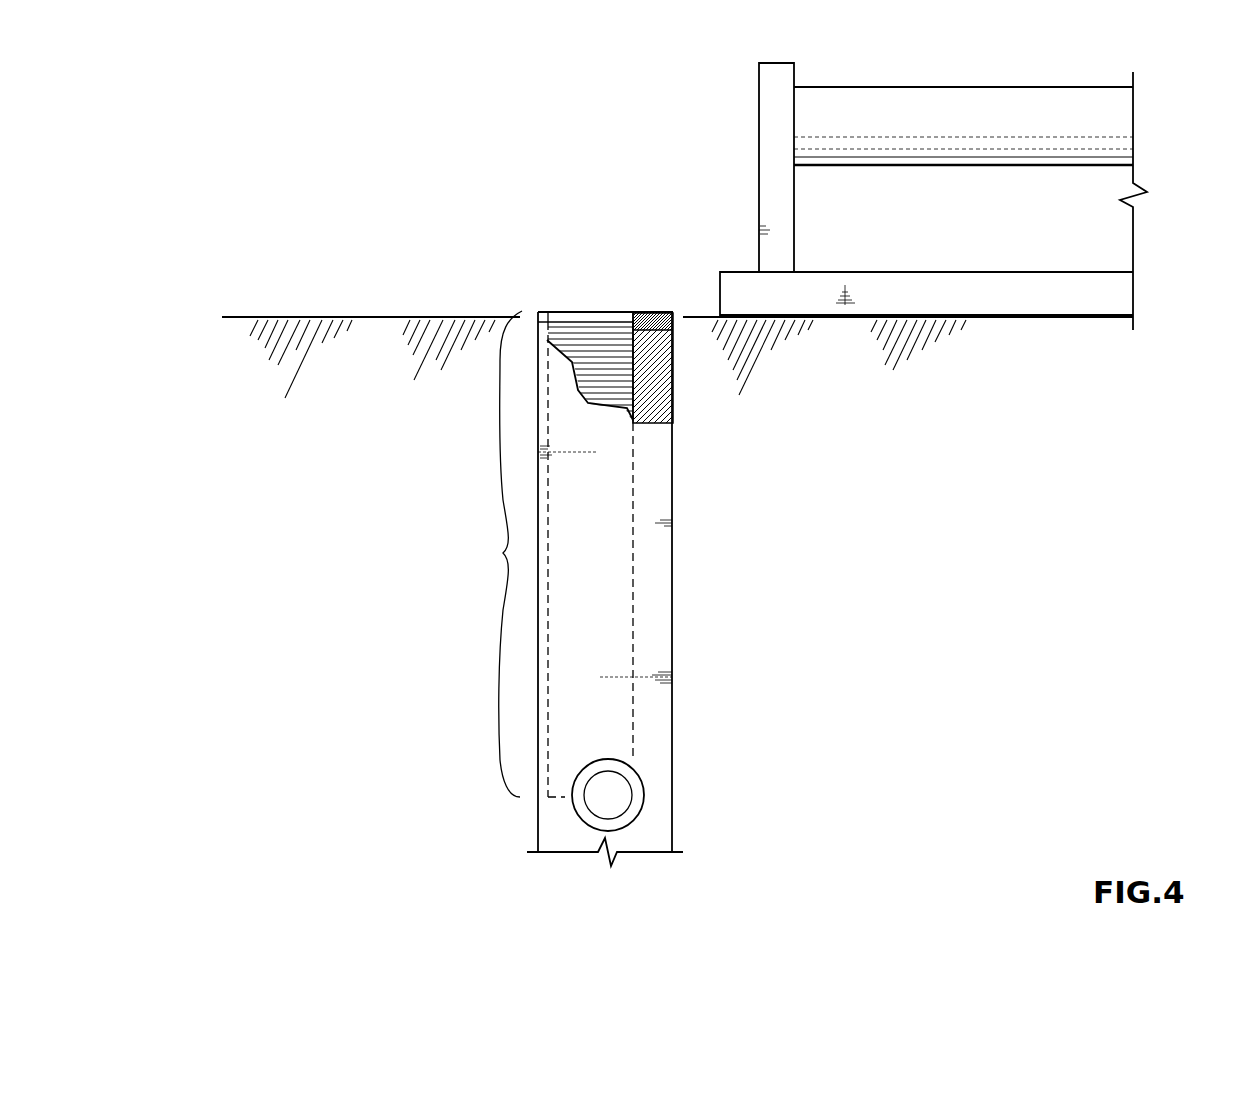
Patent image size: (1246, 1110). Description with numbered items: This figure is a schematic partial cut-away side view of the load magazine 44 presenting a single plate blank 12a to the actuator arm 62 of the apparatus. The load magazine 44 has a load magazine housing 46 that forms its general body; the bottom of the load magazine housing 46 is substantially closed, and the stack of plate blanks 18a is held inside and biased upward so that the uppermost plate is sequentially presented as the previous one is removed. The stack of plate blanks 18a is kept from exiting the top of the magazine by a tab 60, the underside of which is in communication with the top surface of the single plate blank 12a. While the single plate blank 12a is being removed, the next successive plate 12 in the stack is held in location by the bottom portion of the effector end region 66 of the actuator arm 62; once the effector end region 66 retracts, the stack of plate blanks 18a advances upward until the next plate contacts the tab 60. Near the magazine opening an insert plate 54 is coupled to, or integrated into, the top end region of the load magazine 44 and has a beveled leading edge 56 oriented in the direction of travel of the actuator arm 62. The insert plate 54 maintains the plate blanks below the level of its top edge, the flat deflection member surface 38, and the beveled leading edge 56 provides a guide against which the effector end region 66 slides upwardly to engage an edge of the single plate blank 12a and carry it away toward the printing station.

The plate blank 12 is at (618, 385).
The single plate blank 12a is at (558, 323).
The stack of plate blanks 18a is at (484, 554).
The flat deflection member surface 38 is at (643, 323).
The load magazine 44 is at (485, 815).
The load magazine housing 46 is at (672, 622).
The insert plate 54 is at (653, 288).
The beveled leading edge 56 is at (663, 324).
The tab 60 is at (543, 312).
The actuator arm 62 is at (970, 55).
The effector end region 66 is at (724, 306).